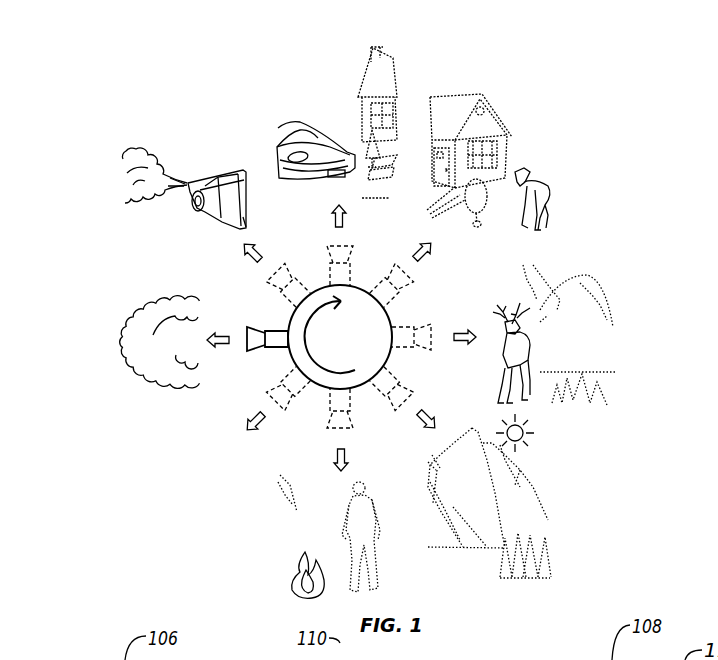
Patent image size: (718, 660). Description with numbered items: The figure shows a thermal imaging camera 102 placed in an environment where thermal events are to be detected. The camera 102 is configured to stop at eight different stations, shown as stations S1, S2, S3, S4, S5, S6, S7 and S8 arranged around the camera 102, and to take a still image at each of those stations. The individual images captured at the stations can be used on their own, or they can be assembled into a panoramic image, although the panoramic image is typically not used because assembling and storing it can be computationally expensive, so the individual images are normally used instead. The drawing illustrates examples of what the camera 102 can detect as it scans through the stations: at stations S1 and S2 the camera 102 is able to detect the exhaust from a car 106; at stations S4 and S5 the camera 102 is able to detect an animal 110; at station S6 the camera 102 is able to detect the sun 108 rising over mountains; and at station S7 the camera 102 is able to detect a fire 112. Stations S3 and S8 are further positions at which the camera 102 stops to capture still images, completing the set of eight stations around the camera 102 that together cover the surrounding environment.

The camera 102 is at (357, 348).
The car 106 is at (228, 173).
The sun 108 is at (523, 438).
The animal 110 is at (533, 178).
The fire 112 is at (300, 573).
The station S1 is at (265, 354).
The station S2 is at (282, 288).
The station S3 is at (327, 264).
The station S4 is at (390, 281).
The station S5 is at (411, 321).
The station S6 is at (398, 383).
The station S7 is at (354, 408).
The station S8 is at (291, 398).